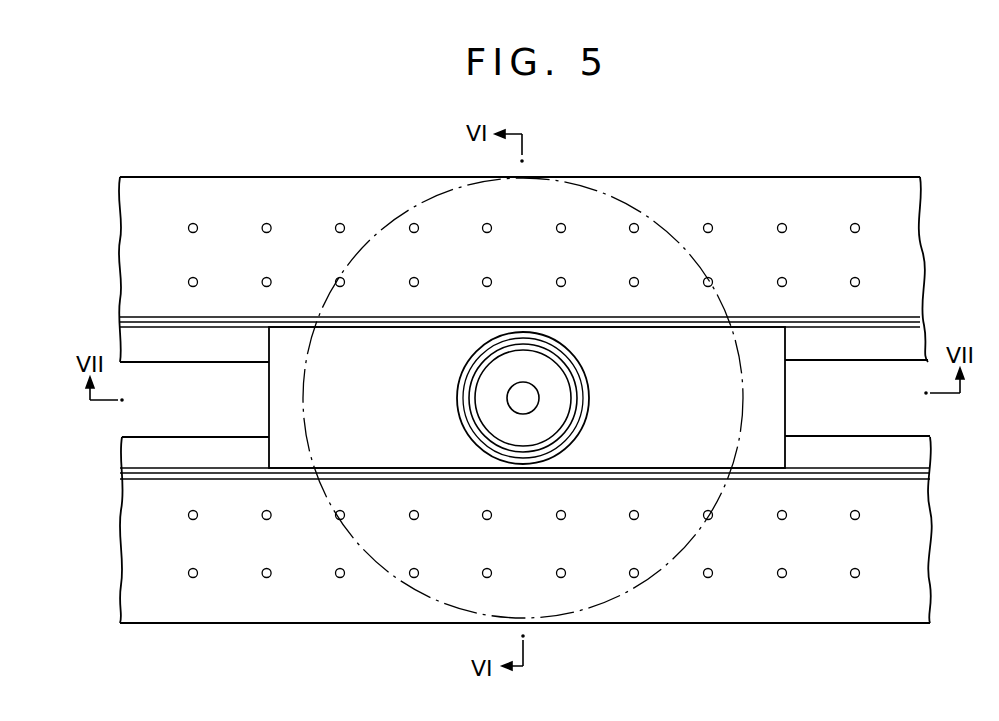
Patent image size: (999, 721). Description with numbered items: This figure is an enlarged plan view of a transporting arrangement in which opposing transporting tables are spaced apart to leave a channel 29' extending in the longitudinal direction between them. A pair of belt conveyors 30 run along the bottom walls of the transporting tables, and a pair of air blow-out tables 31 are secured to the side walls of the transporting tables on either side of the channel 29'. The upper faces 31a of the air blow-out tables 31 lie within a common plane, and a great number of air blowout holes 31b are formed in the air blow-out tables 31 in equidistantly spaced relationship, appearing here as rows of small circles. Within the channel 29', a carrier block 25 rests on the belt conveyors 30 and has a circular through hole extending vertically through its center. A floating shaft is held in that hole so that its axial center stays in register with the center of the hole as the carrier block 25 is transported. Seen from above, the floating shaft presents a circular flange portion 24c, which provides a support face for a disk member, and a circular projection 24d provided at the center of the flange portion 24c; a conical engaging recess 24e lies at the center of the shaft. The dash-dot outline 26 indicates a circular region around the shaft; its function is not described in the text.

The circular flange portion 24c is at (582, 387).
The circular projection 24d is at (548, 370).
The conical engaging recess 24e is at (510, 392).
The carrier block 25 is at (767, 349).
The circular region (dash-dot outline) 26 is at (420, 592).
The channel 29' is at (150, 409).
The belt conveyor 30 is at (882, 350).
The air blow-out table 31 is at (900, 222).
The upper face 31a is at (788, 193).
The air blowout hole 31b is at (858, 279).